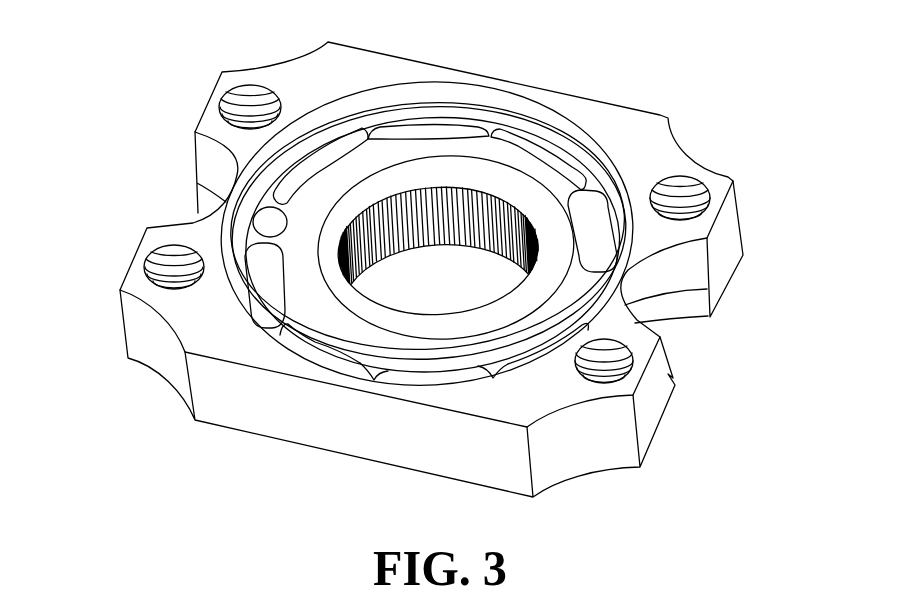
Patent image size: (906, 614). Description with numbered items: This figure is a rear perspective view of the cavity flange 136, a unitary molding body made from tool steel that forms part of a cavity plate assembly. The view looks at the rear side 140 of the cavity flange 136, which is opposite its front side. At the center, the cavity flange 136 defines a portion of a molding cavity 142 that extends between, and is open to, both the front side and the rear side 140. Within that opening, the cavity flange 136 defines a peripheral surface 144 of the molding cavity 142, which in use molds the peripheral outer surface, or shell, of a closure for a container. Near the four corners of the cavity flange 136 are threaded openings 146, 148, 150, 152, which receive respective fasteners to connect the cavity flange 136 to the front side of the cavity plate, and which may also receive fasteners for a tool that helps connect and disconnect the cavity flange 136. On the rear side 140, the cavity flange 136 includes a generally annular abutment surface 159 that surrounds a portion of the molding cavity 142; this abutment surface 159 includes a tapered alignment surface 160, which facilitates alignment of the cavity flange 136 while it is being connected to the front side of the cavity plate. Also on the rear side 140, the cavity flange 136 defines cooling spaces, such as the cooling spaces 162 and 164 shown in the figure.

The cavity flange 136 is at (610, 132).
The rear side 140 is at (212, 240).
The molding cavity 142 is at (458, 288).
The peripheral surface 144 is at (402, 215).
The threaded opening 146 is at (178, 264).
The threaded opening 148 is at (258, 120).
The threaded opening 150 is at (604, 345).
The threaded opening 152 is at (681, 195).
The abutment surface 159 is at (538, 176).
The tapered alignment surface 160 is at (457, 176).
The cooling space 162 is at (268, 290).
The cooling space 164 is at (293, 340).